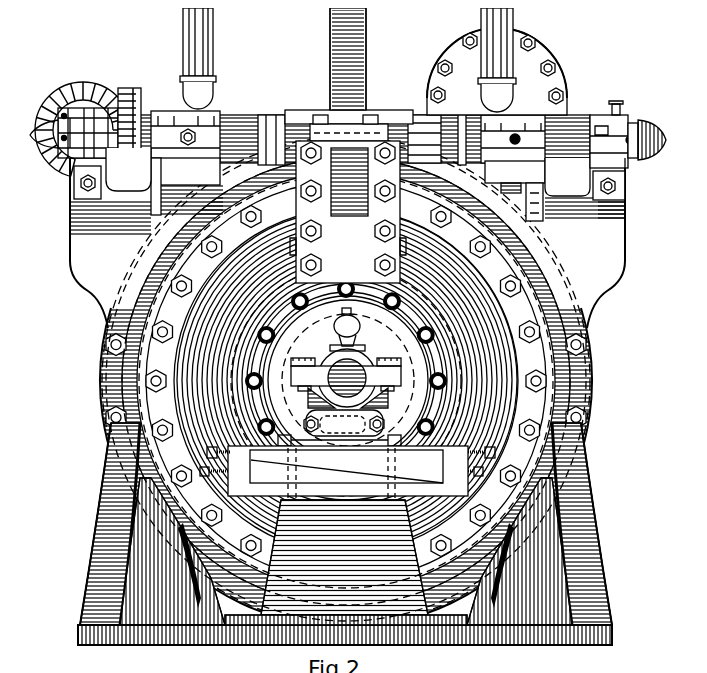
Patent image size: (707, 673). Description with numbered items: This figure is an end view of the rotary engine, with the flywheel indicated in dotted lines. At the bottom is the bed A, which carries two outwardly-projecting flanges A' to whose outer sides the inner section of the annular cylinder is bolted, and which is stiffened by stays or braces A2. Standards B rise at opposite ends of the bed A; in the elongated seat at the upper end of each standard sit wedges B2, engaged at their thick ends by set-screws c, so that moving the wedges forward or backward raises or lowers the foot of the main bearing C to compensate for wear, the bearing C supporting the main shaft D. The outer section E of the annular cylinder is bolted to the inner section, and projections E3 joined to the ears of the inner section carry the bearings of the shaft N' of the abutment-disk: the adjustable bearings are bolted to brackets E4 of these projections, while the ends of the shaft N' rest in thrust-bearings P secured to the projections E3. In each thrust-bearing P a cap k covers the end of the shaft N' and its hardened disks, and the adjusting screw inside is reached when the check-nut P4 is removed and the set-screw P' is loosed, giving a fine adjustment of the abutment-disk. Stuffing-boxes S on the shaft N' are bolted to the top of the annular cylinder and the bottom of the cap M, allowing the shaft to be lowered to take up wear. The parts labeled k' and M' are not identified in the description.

The bed A is at (345, 641).
The outwardly-projecting flange A' is at (344, 524).
The stay or brace A2 is at (597, 557).
The standard B is at (344, 557).
The wedge B2 is at (348, 473).
The main bearing C is at (575, 476).
The set-screw c is at (347, 459).
The main shaft D is at (346, 378).
The outer section of the annular cylinder E is at (346, 381).
The projection E3 is at (619, 245).
The bracket E4 is at (348, 166).
The cap k is at (93, 135).
The pinion bearing k' is at (612, 170).
The cap M is at (336, 112).
The bracket M' is at (348, 212).
The shaft of the abutment-disk N' is at (567, 177).
The thrust-bearing P is at (341, 120).
The set-screw P' is at (617, 100).
The check-nut P4 is at (649, 133).
The stuffing-box S is at (362, 129).